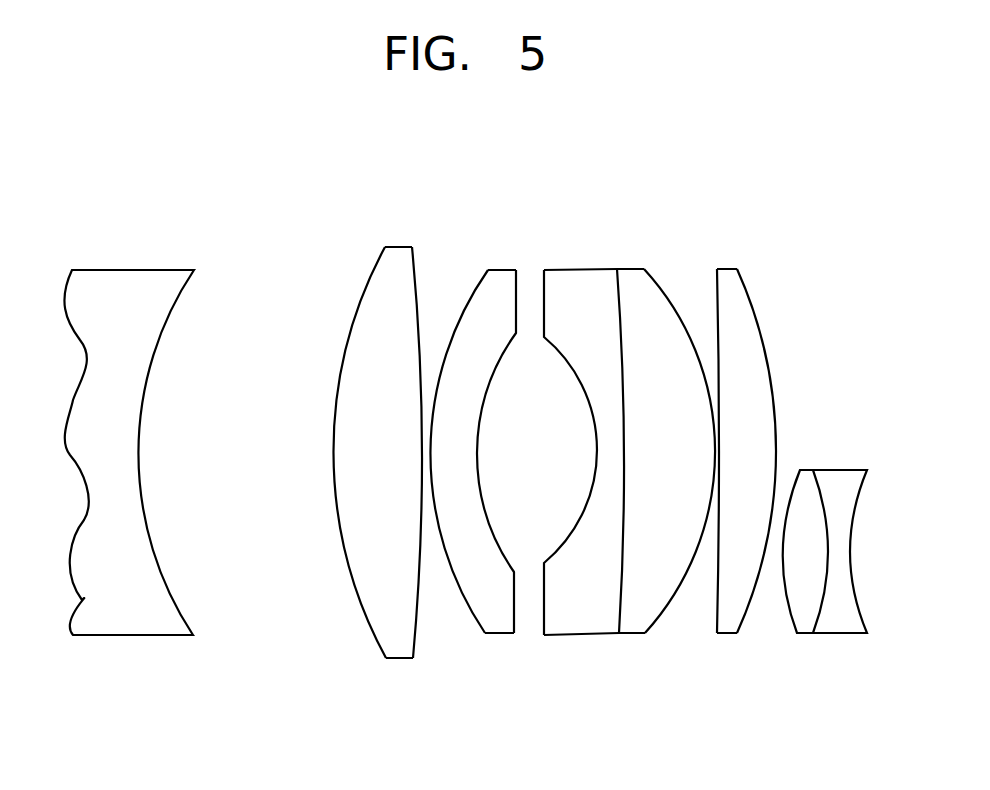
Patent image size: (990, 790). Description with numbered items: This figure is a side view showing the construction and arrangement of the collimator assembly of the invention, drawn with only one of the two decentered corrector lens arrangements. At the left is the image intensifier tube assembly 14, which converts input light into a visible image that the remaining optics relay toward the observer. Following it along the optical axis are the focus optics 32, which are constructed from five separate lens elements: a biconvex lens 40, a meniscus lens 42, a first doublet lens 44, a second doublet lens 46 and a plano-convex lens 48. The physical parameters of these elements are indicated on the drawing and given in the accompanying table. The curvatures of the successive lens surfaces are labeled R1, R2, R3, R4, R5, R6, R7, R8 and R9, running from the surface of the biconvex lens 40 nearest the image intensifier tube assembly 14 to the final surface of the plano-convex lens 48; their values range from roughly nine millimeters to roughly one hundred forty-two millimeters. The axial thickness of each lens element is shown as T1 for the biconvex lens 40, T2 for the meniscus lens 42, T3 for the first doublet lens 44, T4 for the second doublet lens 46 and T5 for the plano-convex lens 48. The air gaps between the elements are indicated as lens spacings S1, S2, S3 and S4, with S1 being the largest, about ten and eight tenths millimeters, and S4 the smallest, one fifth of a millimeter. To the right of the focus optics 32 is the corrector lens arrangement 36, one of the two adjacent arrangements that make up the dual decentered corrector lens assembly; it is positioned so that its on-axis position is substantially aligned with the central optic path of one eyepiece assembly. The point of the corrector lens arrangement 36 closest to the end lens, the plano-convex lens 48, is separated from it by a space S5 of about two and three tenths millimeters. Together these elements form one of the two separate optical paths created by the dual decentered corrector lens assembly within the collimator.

The image intensifier tube assembly 14 is at (128, 268).
The focus optics 32 is at (748, 252).
The corrector lens arrangement 36 is at (838, 467).
The biconvex lens 40 is at (372, 500).
The meniscus lens 42 is at (476, 512).
The first doublet lens 44 is at (580, 490).
The second doublet lens 46 is at (666, 496).
The plano-convex lens 48 is at (725, 479).
The lens surface curvature R1 is at (357, 604).
The lens surface curvature R2 is at (417, 648).
The lens surface curvature R3 is at (475, 624).
The lens surface curvature R4 is at (510, 562).
The lens surface curvature R5 is at (547, 558).
The lens surface curvature R6 is at (619, 612).
The lens surface curvature R7 is at (650, 630).
The lens surface curvature R8 is at (712, 630).
The lens surface curvature R9 is at (740, 625).
The lens spacing S1 is at (331, 453).
The lens spacing S2 is at (424, 440).
The lens spacing S3 is at (597, 453).
The lens spacing S4 is at (714, 445).
The space S5 is at (776, 627).
The lens thickness T1 is at (333, 453).
The lens thickness T2 is at (441, 453).
The lens thickness T3 is at (620, 453).
The lens thickness T4 is at (624, 453).
The lens thickness T5 is at (776, 453).